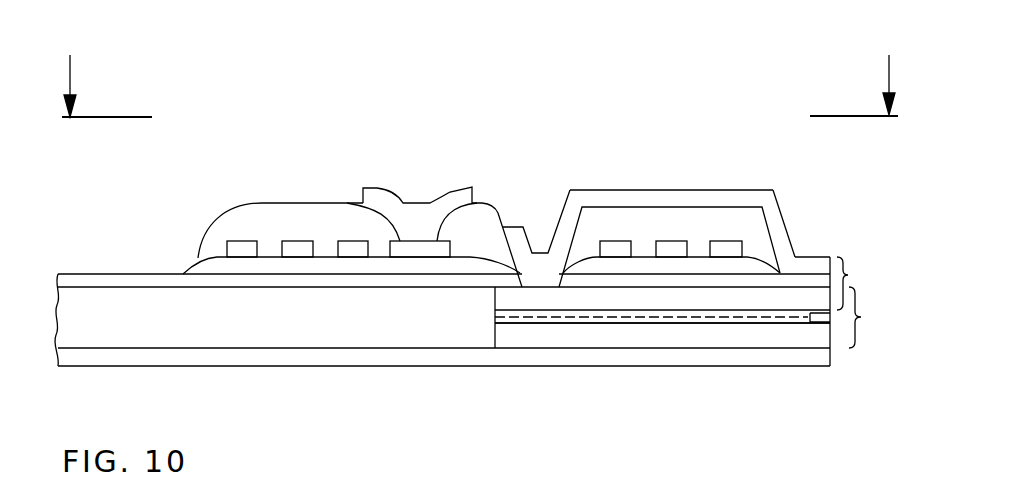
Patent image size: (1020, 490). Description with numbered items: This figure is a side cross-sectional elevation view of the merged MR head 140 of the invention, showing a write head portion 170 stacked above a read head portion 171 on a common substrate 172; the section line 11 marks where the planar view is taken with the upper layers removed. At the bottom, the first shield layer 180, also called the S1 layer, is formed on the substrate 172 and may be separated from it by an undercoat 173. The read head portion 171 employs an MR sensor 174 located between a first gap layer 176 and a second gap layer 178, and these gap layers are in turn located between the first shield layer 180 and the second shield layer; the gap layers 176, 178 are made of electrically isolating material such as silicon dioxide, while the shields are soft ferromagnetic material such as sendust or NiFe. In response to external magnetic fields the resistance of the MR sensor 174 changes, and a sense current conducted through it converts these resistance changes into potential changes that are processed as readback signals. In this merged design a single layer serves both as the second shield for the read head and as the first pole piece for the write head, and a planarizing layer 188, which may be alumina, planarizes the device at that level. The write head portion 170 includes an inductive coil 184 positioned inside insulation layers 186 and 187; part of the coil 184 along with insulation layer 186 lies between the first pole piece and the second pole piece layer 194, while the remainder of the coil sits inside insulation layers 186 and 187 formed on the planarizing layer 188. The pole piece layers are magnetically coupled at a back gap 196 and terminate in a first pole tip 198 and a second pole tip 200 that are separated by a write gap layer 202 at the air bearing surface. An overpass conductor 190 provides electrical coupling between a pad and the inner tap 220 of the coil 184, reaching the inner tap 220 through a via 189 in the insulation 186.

The section line 11- 11 is at (480, 73).
The head 140 is at (341, 105).
The write head portion 170 is at (475, 283).
The read head portion 171 is at (701, 317).
The substrate 172 is at (290, 423).
The undercoat 173 is at (129, 360).
The MR sensor 174 is at (820, 320).
The first gap layer 176 is at (665, 320).
The second gap layer 178 is at (725, 313).
The first shield layer 180 is at (662, 397).
The first shield layer S1 is at (602, 337).
The inductive coil 184 is at (240, 242).
The insulation layer 186 is at (215, 263).
The insulation layer 187 is at (295, 215).
The planarizing layer 188 is at (107, 300).
The via 189 is at (383, 220).
The overpass conductor 190 is at (455, 195).
The second pole piece layer 194 is at (664, 195).
The back gap 196 is at (540, 242).
The first pole tip 198 is at (813, 293).
The second pole tip 200 is at (805, 258).
The write gap layer 202 is at (762, 276).
The inner tap 220 is at (417, 245).